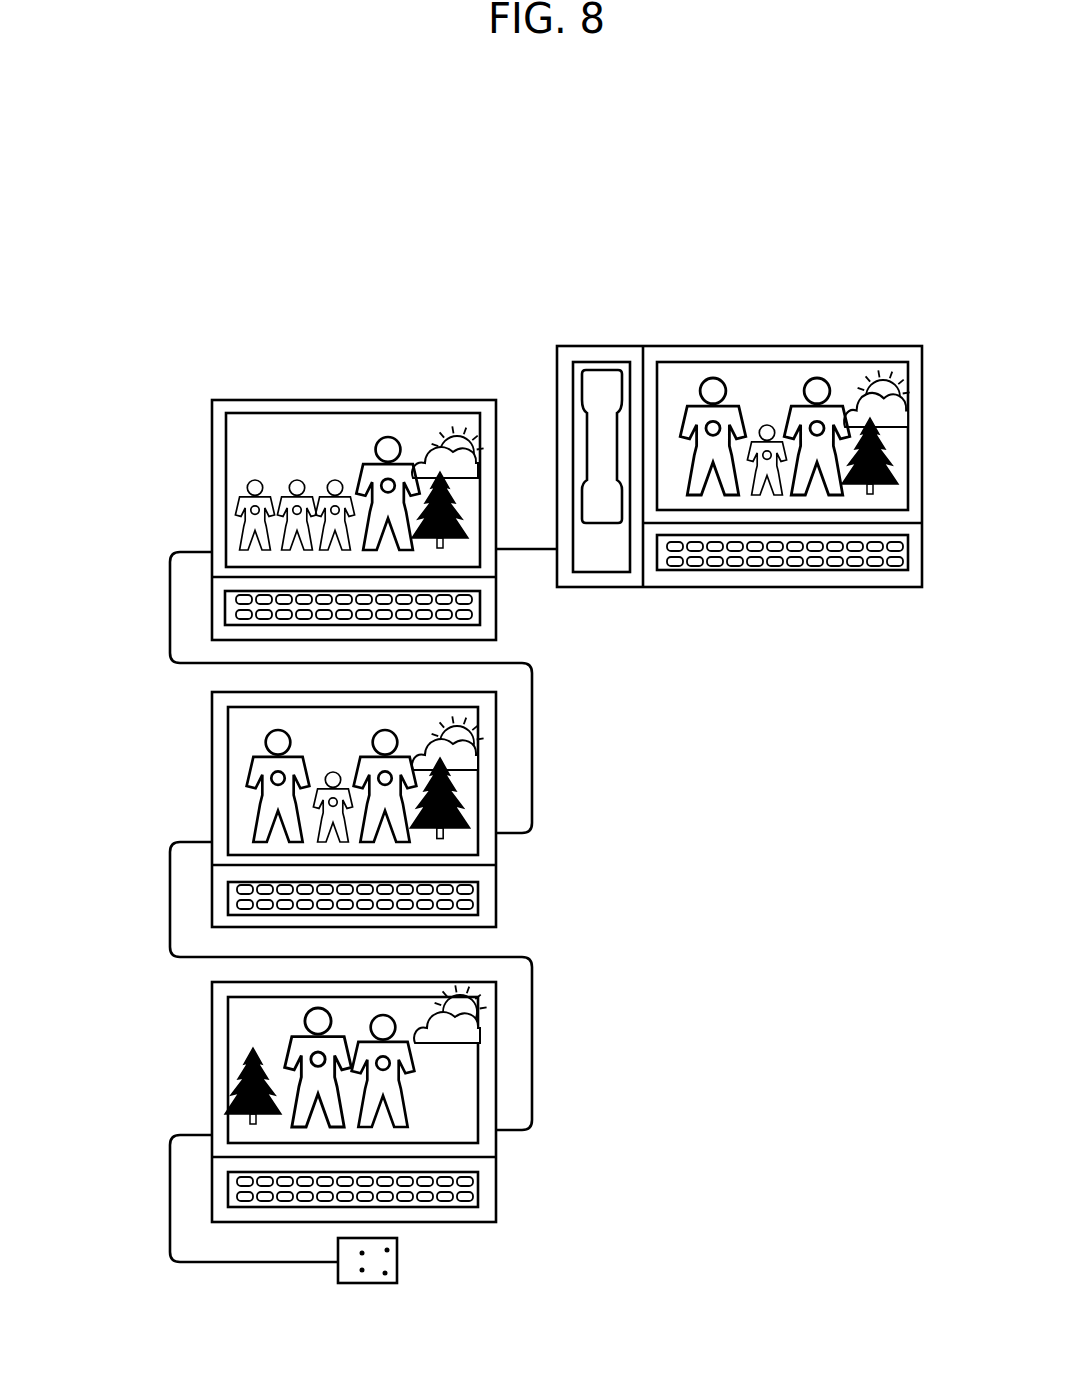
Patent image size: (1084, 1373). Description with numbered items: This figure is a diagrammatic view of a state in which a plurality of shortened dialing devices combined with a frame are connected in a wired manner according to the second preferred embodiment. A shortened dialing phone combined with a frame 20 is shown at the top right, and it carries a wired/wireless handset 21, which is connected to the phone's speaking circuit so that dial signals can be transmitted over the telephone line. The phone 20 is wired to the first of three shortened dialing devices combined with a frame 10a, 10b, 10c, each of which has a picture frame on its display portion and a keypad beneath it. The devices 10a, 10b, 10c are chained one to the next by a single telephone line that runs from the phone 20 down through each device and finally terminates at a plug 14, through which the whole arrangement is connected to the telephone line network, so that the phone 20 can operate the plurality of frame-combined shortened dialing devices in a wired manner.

The shortened dialing device combined with a frame 10a is at (298, 520).
The shortened dialing device combined with a frame 10b is at (298, 809).
The shortened dialing device combined with a frame 10c is at (299, 1102).
The shortened dialing phone combined with a frame 20 is at (739, 417).
The wired/wireless handset 21 is at (607, 390).
The plug 14 is at (370, 1283).